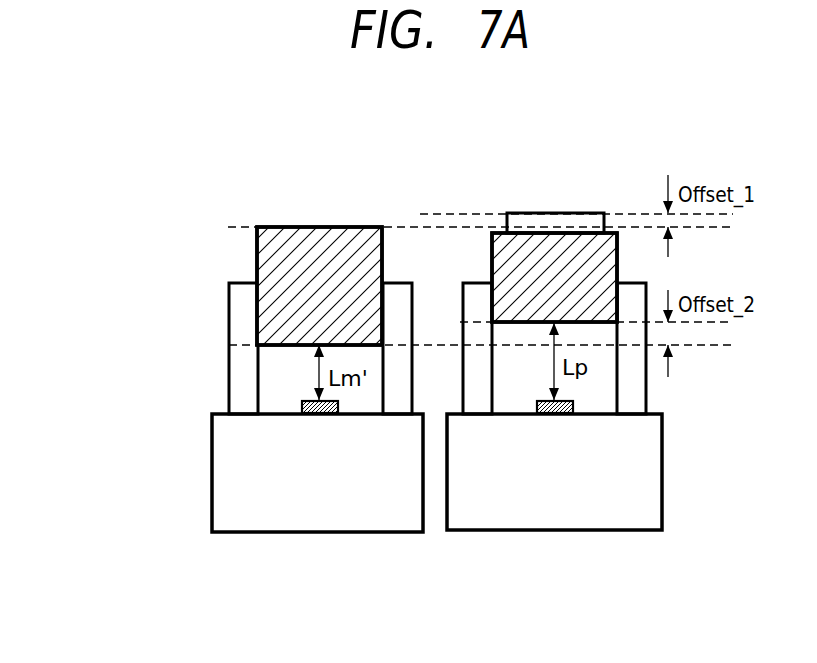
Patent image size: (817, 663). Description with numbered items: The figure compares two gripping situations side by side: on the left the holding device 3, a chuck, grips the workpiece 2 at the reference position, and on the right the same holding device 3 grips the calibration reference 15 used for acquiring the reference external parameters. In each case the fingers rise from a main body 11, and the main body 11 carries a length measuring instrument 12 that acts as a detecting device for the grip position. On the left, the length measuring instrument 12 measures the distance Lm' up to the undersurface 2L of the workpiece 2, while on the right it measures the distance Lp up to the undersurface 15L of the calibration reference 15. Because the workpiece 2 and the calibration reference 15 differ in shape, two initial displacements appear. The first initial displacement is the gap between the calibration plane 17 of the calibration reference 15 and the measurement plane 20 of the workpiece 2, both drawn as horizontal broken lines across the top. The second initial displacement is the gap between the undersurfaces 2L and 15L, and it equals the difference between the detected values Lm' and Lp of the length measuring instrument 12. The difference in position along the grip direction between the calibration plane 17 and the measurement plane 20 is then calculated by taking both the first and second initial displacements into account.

The workpiece 2 is at (315, 227).
The holding device 3 is at (228, 548).
The main body 11 is at (212, 460).
The length measuring instrument 12 is at (320, 414).
The calibration reference 15 is at (580, 192).
The undersurface of the calibration reference 15L is at (730, 323).
The undersurface of the workpiece 2L is at (730, 345).
The calibration plane 17 is at (440, 214).
The measurement plane 20 is at (241, 227).